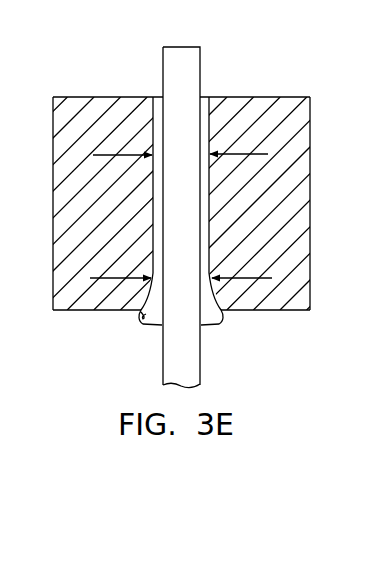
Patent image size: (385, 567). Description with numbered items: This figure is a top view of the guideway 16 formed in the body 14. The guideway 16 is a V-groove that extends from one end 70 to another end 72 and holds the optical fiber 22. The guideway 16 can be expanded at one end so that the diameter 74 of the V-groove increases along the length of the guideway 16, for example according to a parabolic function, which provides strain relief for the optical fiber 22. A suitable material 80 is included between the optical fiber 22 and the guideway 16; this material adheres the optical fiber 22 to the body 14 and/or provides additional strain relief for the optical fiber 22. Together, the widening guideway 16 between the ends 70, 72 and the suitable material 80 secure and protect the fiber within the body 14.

The body 14 is at (291, 206).
The guideway 16 is at (218, 134).
The one end 70 is at (210, 88).
The optical fiber 22 is at (180, 357).
The diameter 74 is at (266, 154).
The another end 72 is at (228, 326).
The suitable material 80 is at (145, 320).